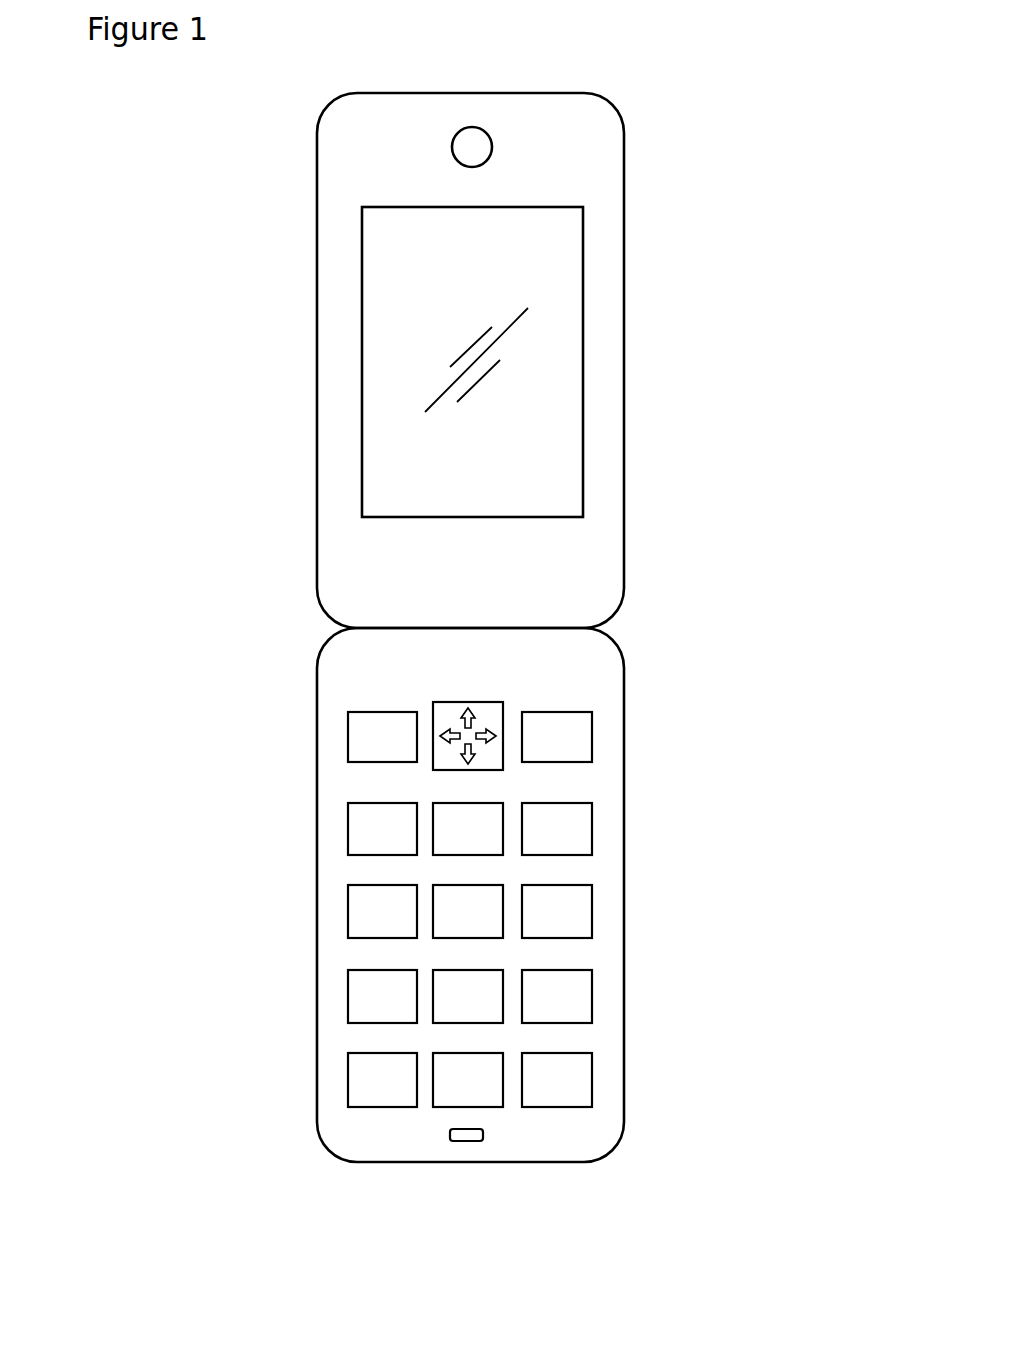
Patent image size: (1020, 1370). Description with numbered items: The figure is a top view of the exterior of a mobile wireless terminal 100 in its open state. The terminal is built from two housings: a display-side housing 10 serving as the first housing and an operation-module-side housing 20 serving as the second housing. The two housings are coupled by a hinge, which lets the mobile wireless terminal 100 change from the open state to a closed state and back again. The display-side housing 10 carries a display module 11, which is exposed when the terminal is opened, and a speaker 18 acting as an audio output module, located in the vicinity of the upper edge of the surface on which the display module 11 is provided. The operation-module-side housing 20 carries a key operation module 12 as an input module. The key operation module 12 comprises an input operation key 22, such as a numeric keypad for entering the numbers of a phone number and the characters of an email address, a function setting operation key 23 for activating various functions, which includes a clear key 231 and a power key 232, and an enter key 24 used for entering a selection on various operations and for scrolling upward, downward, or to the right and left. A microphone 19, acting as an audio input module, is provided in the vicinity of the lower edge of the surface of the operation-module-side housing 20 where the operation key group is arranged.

The mobile wireless terminal 100 is at (210, 550).
The display-side housing 10 is at (317, 570).
The operation-module-side housing 20 is at (317, 680).
The display module 11 is at (583, 362).
The speaker 18 is at (472, 127).
The microphone 19 is at (462, 1141).
The key operation module 12 is at (718, 703).
The input operation key 22 is at (592, 903).
The function setting operation key 23 is at (683, 730).
The clear key 231 is at (405, 756).
The power key 232 is at (592, 740).
The enter key 24 is at (503, 707).